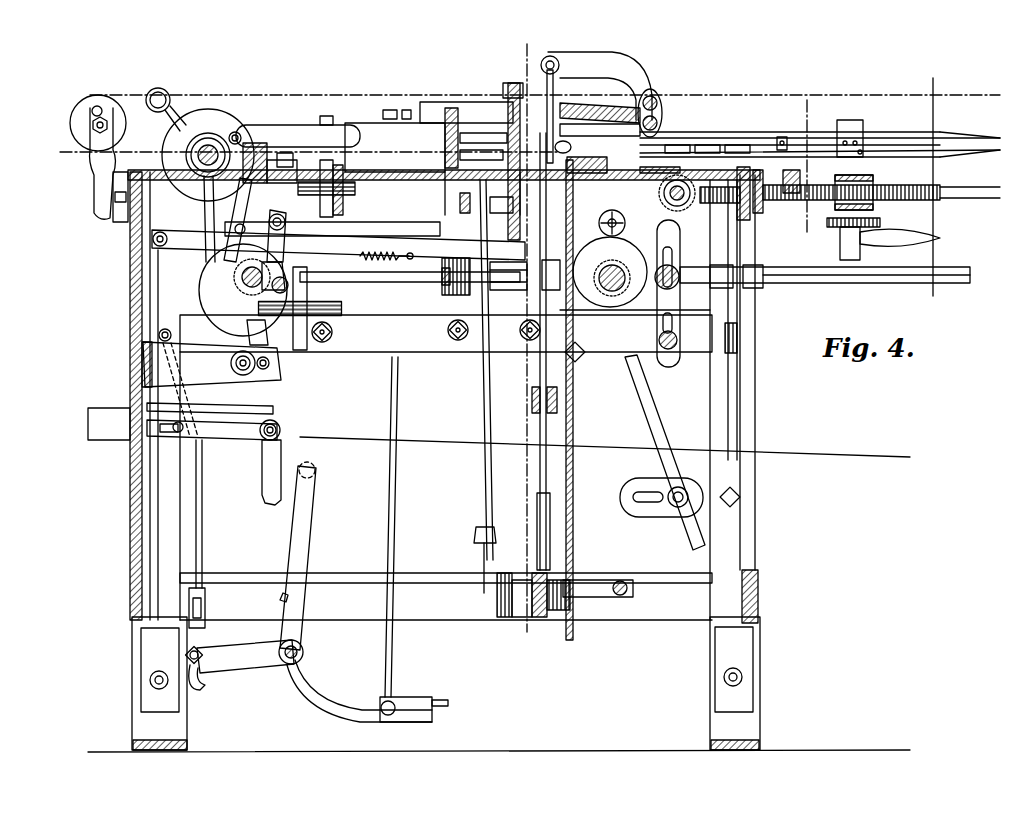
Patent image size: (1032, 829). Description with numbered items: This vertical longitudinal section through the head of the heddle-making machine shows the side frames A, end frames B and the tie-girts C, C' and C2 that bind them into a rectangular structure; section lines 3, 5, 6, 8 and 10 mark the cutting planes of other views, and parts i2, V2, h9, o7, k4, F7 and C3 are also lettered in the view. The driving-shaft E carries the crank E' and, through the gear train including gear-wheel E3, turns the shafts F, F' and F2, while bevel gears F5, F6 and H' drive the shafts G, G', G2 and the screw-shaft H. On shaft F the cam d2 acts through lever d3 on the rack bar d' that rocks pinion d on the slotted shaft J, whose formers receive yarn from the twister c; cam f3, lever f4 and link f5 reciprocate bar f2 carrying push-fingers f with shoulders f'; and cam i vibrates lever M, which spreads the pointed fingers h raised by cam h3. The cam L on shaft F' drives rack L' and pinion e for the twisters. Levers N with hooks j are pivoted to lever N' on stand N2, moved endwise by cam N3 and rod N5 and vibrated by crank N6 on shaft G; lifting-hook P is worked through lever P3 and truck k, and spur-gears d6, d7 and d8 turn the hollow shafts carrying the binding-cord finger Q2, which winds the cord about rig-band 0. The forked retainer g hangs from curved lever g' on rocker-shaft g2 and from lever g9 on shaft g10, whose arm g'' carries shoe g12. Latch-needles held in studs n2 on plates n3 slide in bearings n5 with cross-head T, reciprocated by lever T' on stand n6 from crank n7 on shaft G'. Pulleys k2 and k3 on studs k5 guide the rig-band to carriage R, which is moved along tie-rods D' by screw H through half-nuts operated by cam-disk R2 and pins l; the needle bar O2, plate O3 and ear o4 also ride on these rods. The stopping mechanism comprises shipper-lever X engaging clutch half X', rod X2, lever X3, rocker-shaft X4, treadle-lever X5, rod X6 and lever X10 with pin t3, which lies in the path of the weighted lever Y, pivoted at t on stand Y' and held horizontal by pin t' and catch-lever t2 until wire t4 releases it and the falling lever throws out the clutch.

The section line 5 is at (526, 330).
The section line 3 is at (526, 639).
The section line 6 is at (806, 158).
The section line 8 is at (806, 239).
The section line 10 is at (936, 187).
The pin k5 is at (100, 136).
The pulley k2 is at (107, 158).
The eccentric pin E' is at (166, 108).
The disk X' is at (208, 155).
The hub E3 is at (208, 149).
The shaft E is at (192, 155).
The lever X is at (215, 219).
The pin f5 is at (244, 132).
The arm f2 is at (298, 136).
The lug d6 is at (315, 115).
The block i2 is at (255, 163).
The link f4 is at (238, 220).
The rack d7 is at (318, 200).
The lever M is at (338, 245).
The bar d' is at (332, 231).
The slide d is at (284, 227).
The pivot c is at (240, 248).
The lever d3 is at (274, 250).
The cam f3 is at (243, 294).
The shaft F is at (245, 287).
The link t2 is at (180, 390).
The lever Y' is at (210, 405).
The lever Y is at (182, 424).
The pivot t is at (272, 423).
The pin t' is at (171, 421).
The rod t4 is at (605, 443).
The pin t3 is at (314, 465).
The lever X10 is at (298, 558).
The rod X2 is at (204, 480).
The lever X3 is at (240, 665).
The pivot X4 is at (304, 652).
The arm X5 is at (367, 691).
The rod X6 is at (396, 516).
The bracket C2 is at (429, 146).
The post P3 is at (451, 108).
The bars Q2 is at (485, 136).
The pin J is at (502, 120).
The pin i is at (469, 126).
The arm f' is at (481, 129).
The arm f is at (465, 155).
The pin e is at (530, 130).
The bracket C' is at (466, 182).
The plate P is at (481, 184).
The block V2 is at (486, 203).
The pin j is at (533, 178).
The rod h is at (547, 351).
The rod g is at (547, 116).
The arm g' is at (596, 86).
The pin h9 is at (630, 117).
The arm g9 is at (600, 113).
The bar g12 is at (600, 128).
The eye 0 is at (563, 147).
The lug g2 is at (655, 109).
The pin g'' is at (669, 106).
The pin g10 is at (657, 123).
The bar T is at (812, 151).
The segment n2 is at (692, 134).
The segment n5 is at (737, 134).
The bracket o7 is at (785, 130).
The bar L is at (787, 213).
The shaft D' is at (970, 190).
The frame C is at (581, 189).
The gear F2 is at (677, 205).
The shaft H' is at (718, 209).
The screw H is at (851, 201).
The nut R is at (854, 192).
The nut o4 is at (798, 181).
The collar O3 is at (778, 204).
The collar O2 is at (793, 204).
The pin l is at (832, 210).
The handle R2 is at (883, 237).
The handle n3 is at (922, 240).
The wheel h3 is at (621, 223).
The collar k4 is at (550, 255).
The arm F7 is at (660, 213).
The lever T' is at (668, 293).
The pin n7 is at (683, 262).
The disk k3 is at (610, 272).
The shaft F' is at (614, 278).
The gear F5 is at (616, 300).
The gear F6 is at (633, 300).
The pin k is at (556, 329).
The shaft G' is at (812, 272).
The collar C3 is at (736, 269).
The shaft G2 is at (866, 261).
The pin n6 is at (678, 340).
The lever L' is at (662, 452).
The frame A is at (579, 499).
The standard B is at (431, 345).
The spring d2 is at (386, 243).
The shaft d8 is at (410, 289).
The rack N3 is at (357, 308).
The gear G is at (440, 280).
The sleeve N6 is at (508, 276).
The shaft N is at (521, 428).
The rod N5 is at (488, 386).
The collar N' is at (541, 478).
The gear N2 is at (565, 597).